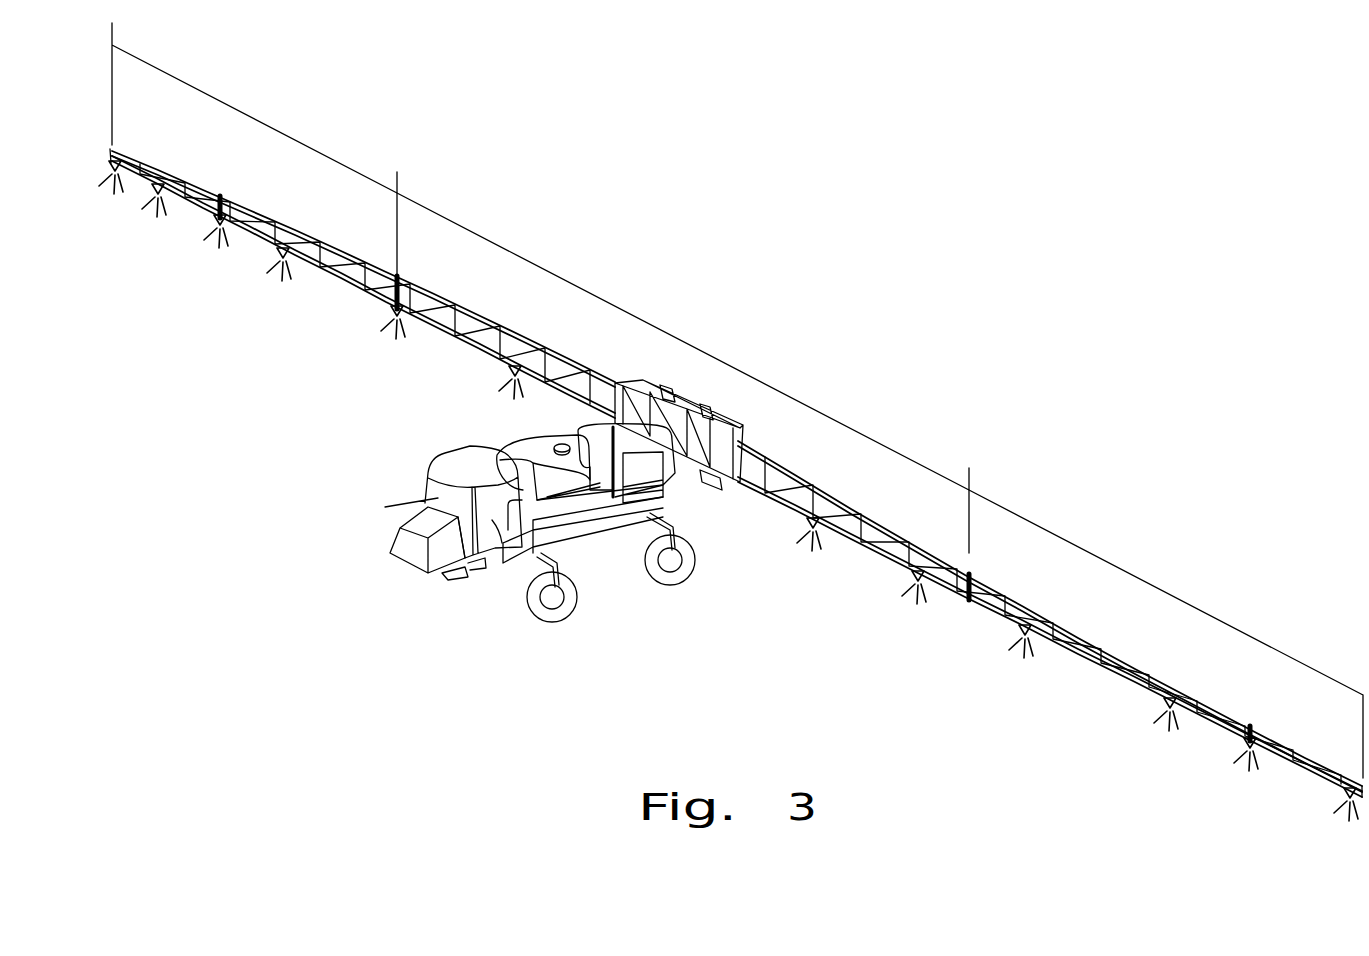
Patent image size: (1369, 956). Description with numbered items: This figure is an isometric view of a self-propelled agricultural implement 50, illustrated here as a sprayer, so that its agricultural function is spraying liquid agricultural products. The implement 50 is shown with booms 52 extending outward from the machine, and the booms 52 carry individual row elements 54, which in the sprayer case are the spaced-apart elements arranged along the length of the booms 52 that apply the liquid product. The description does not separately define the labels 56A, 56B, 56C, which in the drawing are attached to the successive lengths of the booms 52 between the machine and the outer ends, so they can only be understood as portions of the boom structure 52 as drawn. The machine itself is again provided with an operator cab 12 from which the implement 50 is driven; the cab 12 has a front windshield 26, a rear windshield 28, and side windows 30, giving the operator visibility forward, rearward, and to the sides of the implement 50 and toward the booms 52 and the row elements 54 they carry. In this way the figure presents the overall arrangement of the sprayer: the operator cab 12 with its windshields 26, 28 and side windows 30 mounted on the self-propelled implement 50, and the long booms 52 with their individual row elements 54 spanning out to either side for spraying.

The operator cab 12 is at (522, 520).
The front windshield 26 is at (440, 497).
The rear windshield 28 is at (497, 447).
The side windows 30 is at (490, 520).
The self-propelled agricultural implement 50 is at (527, 443).
The booms 52 is at (480, 313).
The individual row elements 54 is at (283, 279).
The left boom section 56A is at (253, 118).
The center boom section 56B is at (667, 331).
The right boom section 56C is at (1167, 591).